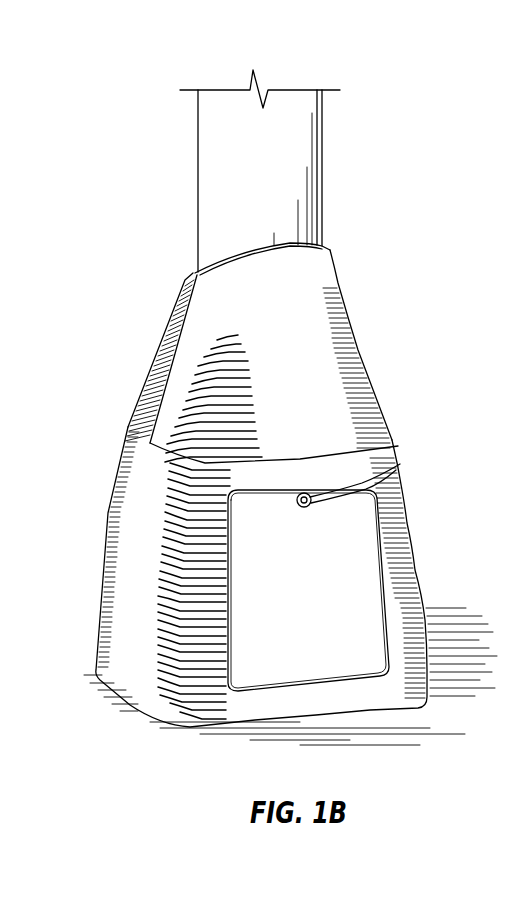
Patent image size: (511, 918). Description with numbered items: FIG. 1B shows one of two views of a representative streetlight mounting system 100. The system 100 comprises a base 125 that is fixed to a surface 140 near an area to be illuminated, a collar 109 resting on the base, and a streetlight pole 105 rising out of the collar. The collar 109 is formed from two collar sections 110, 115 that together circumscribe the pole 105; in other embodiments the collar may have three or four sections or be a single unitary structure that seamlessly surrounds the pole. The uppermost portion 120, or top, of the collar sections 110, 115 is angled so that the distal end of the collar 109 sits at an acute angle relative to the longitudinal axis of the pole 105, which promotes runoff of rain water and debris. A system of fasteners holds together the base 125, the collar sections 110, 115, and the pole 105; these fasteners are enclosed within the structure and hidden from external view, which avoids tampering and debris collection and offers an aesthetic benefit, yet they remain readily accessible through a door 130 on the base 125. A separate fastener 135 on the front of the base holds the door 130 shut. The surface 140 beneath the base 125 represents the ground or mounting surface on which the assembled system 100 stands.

The streetlight mounting system 100 is at (110, 76).
The streetlight pole 105 is at (307, 143).
The collar 109 is at (370, 320).
The collar section 110 is at (162, 350).
The collar section 115 is at (360, 408).
The uppermost portion 120 is at (197, 268).
The base 125 is at (400, 548).
The door 130 is at (365, 598).
The fastener 135 is at (402, 464).
The surface 140 is at (444, 756).